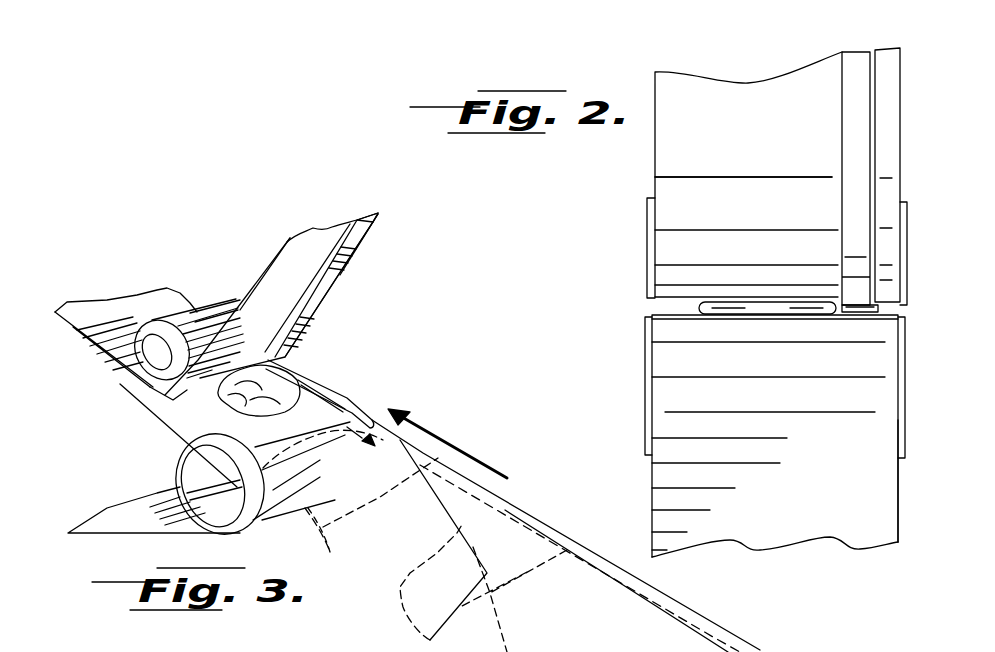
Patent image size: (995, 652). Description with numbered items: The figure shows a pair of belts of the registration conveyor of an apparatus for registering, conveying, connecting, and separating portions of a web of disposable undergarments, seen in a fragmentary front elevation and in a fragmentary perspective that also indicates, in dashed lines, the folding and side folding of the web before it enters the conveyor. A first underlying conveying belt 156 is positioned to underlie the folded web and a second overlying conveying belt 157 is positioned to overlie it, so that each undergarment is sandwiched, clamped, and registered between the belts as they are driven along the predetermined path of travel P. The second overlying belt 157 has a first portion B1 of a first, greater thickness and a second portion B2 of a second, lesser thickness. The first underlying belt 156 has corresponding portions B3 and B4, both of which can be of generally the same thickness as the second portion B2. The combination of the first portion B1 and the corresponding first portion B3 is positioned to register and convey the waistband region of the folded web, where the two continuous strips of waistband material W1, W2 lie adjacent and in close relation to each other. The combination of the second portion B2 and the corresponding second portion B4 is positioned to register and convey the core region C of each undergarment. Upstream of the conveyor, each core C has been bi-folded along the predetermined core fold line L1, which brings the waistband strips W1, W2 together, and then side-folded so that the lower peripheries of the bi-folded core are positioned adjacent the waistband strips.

In FIG. 2, the first portion of second overlying conveying belt B1 is at (860, 60).
In FIG. 3, the first portion of second overlying conveying belt B1 is at (372, 224).
In FIG. 2, the second portion of second overlying conveying belt B2 is at (738, 95).
In FIG. 3, the second portion of second overlying conveying belt B2 is at (344, 185).
In FIG. 2, the first portion of first underlying conveying belt B3 is at (854, 509).
In FIG. 3, the first portion of first underlying conveying belt B3 is at (300, 372).
In FIG. 2, the second portion of first underlying conveying belt B4 is at (678, 364).
In FIG. 3, the second portion of first underlying conveying belt B4 is at (150, 392).
In FIG. 2, the second overlying conveying belt 157 is at (683, 162).
In FIG. 3, the second overlying conveying belt 157 is at (293, 307).
In FIG. 2, the first underlying conveying belt 156 is at (722, 450).
In FIG. 3, the first underlying conveying belt 156 is at (200, 405).
In FIG. 2, the core C is at (778, 300).
In FIG. 2, the first continuous strip of waistband material W1 is at (862, 318).
In FIG. 2, the second continuous strip of waistband material W2 is at (852, 359).
In FIG. 3, the path of travel P is at (457, 453).
In FIG. 3, the core fold line L1 is at (331, 541).